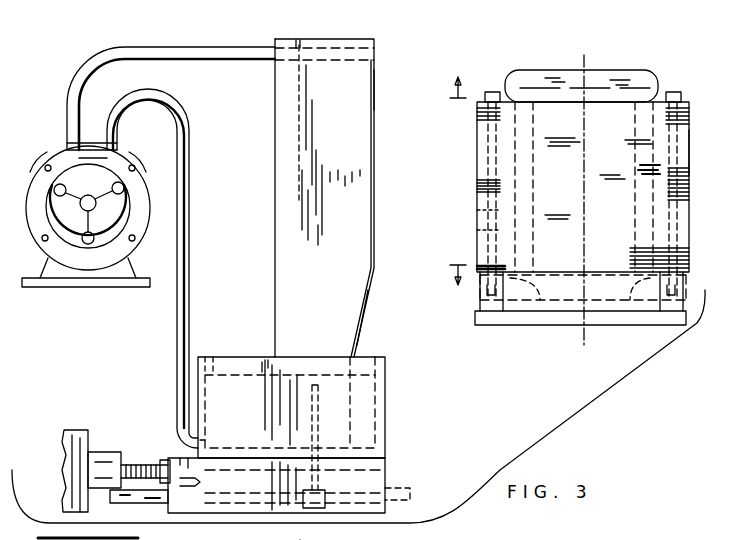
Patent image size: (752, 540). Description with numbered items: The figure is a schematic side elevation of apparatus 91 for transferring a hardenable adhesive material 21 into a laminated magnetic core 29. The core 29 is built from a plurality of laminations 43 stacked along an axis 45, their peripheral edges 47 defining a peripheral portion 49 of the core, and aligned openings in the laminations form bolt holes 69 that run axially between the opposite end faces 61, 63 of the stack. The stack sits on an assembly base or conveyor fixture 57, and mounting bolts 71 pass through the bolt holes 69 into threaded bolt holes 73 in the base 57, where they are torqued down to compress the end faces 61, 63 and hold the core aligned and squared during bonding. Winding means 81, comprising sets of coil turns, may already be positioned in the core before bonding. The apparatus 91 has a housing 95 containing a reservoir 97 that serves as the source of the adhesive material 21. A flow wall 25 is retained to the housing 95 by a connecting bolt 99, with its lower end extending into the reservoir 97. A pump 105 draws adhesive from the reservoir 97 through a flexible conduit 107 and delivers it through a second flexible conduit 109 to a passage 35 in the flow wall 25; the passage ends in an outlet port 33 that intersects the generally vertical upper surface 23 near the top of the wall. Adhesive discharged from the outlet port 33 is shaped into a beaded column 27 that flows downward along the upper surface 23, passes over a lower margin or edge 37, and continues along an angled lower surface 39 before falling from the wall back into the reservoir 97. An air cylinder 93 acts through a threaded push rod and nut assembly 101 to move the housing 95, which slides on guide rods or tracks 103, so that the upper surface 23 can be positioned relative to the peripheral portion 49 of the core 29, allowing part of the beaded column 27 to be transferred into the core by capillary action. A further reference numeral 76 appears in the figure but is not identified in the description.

The apparatus 91 is at (70, 340).
The hardenable adhesive material 21 is at (248, 366).
The upper surface 23 is at (378, 182).
The flow wall 25 is at (286, 90).
The beaded column 27 is at (378, 94).
The core 29 is at (478, 160).
The outlet port 33 is at (377, 47).
The passage 35 is at (322, 46).
The lower margin or edge 37 is at (370, 296).
The lower surface 39 is at (362, 321).
The laminations 43 is at (480, 190).
The axis 45 is at (578, 332).
The peripheral edges 47 is at (686, 163).
The peripheral portion 49 is at (478, 218).
The assembly base 57 is at (516, 314).
The end face 61 is at (680, 92).
The end face 63 is at (686, 276).
The bolt holes 69 is at (690, 205).
The mounting bolts 71 is at (492, 92).
The threaded bolt holes 73 is at (457, 284).
The support legs 76 is at (483, 280).
The winding means 81 is at (672, 53).
The air cylinder 93 is at (70, 459).
The housing 95 is at (378, 487).
The reservoir 97 is at (218, 367).
The connecting bolt 99 is at (385, 473).
The threaded push rod and nut assembly 101 is at (153, 468).
The guide rods 103 is at (127, 477).
The pump 105 is at (40, 176).
The flexible conduit 107 is at (178, 350).
The flexible conduit 109 is at (242, 47).